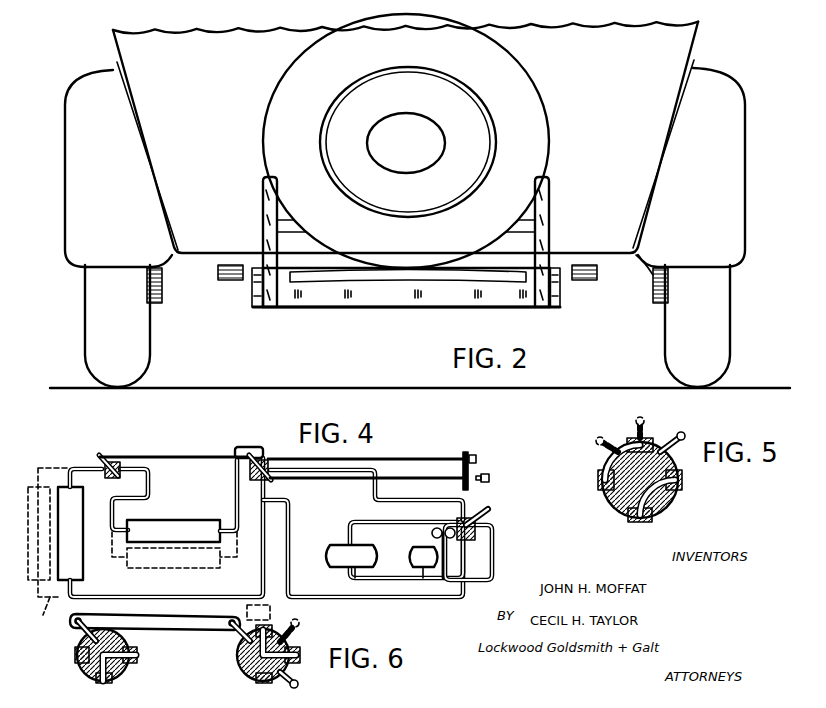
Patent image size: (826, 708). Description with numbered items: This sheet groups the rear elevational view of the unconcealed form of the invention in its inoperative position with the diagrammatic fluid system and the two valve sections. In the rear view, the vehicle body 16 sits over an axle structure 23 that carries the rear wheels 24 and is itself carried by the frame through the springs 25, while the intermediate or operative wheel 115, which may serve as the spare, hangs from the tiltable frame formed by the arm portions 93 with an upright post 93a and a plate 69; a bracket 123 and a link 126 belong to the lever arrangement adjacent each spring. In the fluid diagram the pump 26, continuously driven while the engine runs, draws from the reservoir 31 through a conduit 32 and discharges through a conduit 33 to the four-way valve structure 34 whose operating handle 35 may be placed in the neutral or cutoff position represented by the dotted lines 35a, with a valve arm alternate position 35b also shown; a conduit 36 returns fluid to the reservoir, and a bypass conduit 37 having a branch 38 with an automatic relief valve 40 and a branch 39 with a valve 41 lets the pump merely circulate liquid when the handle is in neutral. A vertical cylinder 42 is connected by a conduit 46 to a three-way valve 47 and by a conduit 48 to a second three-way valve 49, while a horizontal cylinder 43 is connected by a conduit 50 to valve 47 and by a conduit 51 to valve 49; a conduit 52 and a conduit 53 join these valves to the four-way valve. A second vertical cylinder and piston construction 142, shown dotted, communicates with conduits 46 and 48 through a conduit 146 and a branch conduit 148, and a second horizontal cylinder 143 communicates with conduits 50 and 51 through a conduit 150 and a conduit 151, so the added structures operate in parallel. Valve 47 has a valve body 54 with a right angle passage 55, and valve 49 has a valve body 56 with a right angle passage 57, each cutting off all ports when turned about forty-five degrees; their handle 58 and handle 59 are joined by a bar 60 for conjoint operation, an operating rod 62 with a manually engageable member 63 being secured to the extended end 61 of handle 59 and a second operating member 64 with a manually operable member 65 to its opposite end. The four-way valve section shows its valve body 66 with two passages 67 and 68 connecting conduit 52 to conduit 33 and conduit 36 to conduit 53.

In FIG. 2, the vehicle body 16 is at (675, 50).
In FIG. 2, the axle structure 23 is at (638, 262).
In FIG. 2, the rear wheels 24 is at (713, 325).
In FIG. 2, the springs 25 is at (585, 282).
In FIG. 4, the pump 26 is at (412, 555).
In FIG. 4, the reservoir 31 is at (340, 551).
In FIG. 4, the conduit 32 is at (398, 578).
In FIG. 4, the conduit 33 is at (493, 559).
In FIG. 5, the conduit 33 is at (684, 481).
In FIG. 4, the 4-way valve structure 34 is at (477, 530).
In FIG. 5, the 4-way valve structure 34 is at (665, 508).
In FIG. 4, the operating handle 35 is at (490, 510).
In FIG. 5, the operating handle 35 is at (682, 433).
In FIG. 5, the dotted lines 35a is at (643, 418).
In FIG. 5, the valve arm alternate position 35b is at (596, 439).
In FIG. 4, the conduit 36 is at (378, 522).
In FIG. 5, the conduit 36 is at (600, 479).
In FIG. 4, the bypass conduit 37 is at (448, 568).
In FIG. 4, the branch 38 is at (435, 529).
In FIG. 4, the branch 39 is at (448, 529).
In FIG. 4, the automatic relief valve 40 is at (432, 534).
In FIG. 4, the valve 41 is at (455, 536).
In FIG. 4, the vertical cylinder 42 is at (73, 538).
In FIG. 4, the horizontal cylinder 43 is at (200, 527).
In FIG. 4, the conduit 46 is at (80, 467).
In FIG. 6, the conduit 46 is at (76, 655).
In FIG. 4, the 3-way valve 47 is at (108, 477).
In FIG. 6, the 3-way valve 47 is at (120, 670).
In FIG. 4, the conduit 48 is at (126, 596).
In FIG. 6, the conduit 48 is at (264, 684).
In FIG. 4, the 3-way valve 49 is at (251, 470).
In FIG. 6, the 3-way valve 49 is at (250, 668).
In FIG. 4, the conduit 50 is at (160, 482).
In FIG. 6, the conduit 50 is at (138, 657).
In FIG. 4, the conduit 51 is at (236, 484).
In FIG. 6, the conduit 51 is at (272, 618).
In FIG. 4, the conduit 52 is at (290, 534).
In FIG. 5, the conduit 52 is at (640, 523).
In FIG. 6, the conduit 52 is at (104, 684).
In FIG. 4, the conduit 53 is at (342, 469).
In FIG. 5, the conduit 53 is at (628, 440).
In FIG. 6, the conduit 53 is at (300, 655).
In FIG. 6, the valve body 54 is at (86, 668).
In FIG. 6, the right angle passage 55 is at (120, 652).
In FIG. 6, the valve body 56 is at (299, 680).
In FIG. 6, the right angle passage 57 is at (285, 647).
In FIG. 4, the handle 58 is at (103, 453).
In FIG. 6, the handle 58 is at (80, 633).
In FIG. 4, the handle 59 is at (262, 452).
In FIG. 6, the handle 59 is at (240, 636).
In FIG. 4, the bar 60 is at (188, 455).
In FIG. 6, the bar 60 is at (190, 631).
In FIG. 4, the extended end 61 is at (272, 480).
In FIG. 4, the operating rod 62 is at (348, 480).
In FIG. 4, the manually engageable member 63 is at (490, 478).
In FIG. 4, the second operating member 64 is at (397, 458).
In FIG. 4, the manually operable member 65 is at (477, 457).
In FIG. 5, the valve body 66 is at (618, 504).
In FIG. 5, the passage 67 is at (668, 492).
In FIG. 5, the passage 68 is at (610, 488).
In FIG. 4, the plate 69 is at (465, 451).
In FIG. 2, the arm portions 93 is at (268, 306).
In FIG. 2, the upright post 93a is at (530, 227).
In FIG. 2, the intermediate or operative wheel 115 is at (378, 258).
In FIG. 2, the bracket 123 is at (432, 298).
In FIG. 2, the link 126 is at (250, 283).
In FIG. 4, the second vertical cylinder and piston construction 142 is at (33, 482).
In FIG. 4, the second horizontal cylinder 143 is at (200, 565).
In FIG. 4, the conduit 146 is at (50, 466).
In FIG. 4, the branch conduit 148 is at (35, 614).
In FIG. 4, the conduit 150 is at (111, 560).
In FIG. 4, the conduit 151 is at (232, 560).